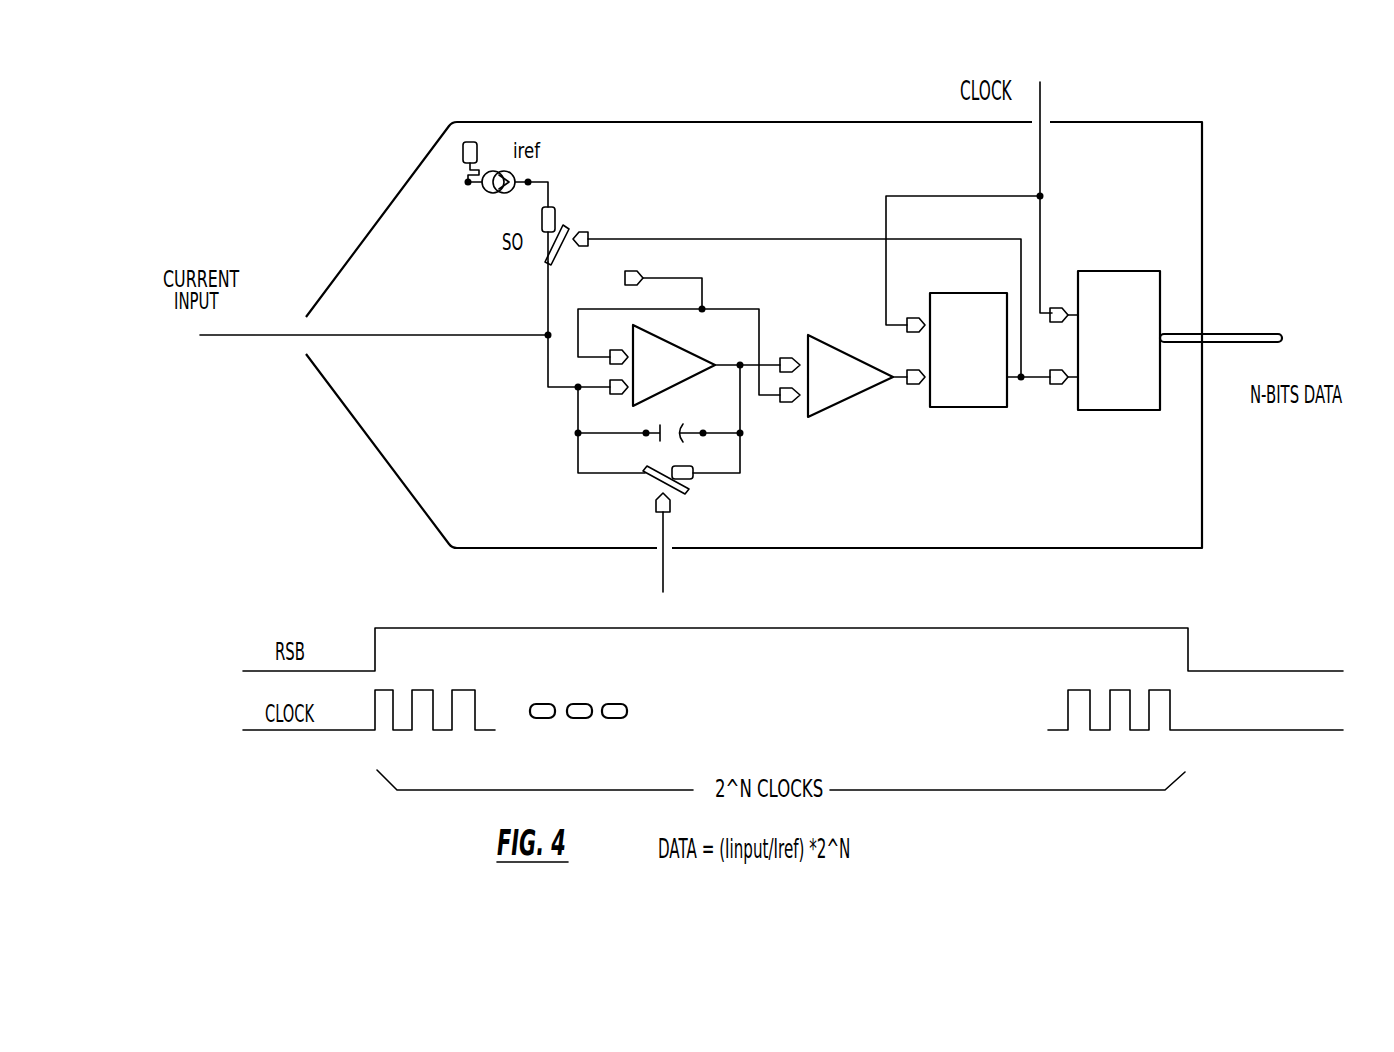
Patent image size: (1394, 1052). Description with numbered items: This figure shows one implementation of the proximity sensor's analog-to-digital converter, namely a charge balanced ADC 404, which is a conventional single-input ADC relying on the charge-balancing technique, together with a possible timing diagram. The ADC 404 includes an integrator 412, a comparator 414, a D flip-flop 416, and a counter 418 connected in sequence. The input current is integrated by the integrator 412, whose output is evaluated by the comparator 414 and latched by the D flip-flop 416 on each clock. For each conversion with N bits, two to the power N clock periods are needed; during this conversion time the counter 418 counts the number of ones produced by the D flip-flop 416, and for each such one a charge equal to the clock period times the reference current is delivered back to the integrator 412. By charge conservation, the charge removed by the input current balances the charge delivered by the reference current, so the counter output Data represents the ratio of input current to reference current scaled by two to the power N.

The charge balanced ADC 404 is at (1120, 122).
The integrator 412 is at (522, 465).
The comparator 414 is at (822, 500).
The D flip-flop 416 is at (981, 482).
The counter 418 is at (1133, 487).